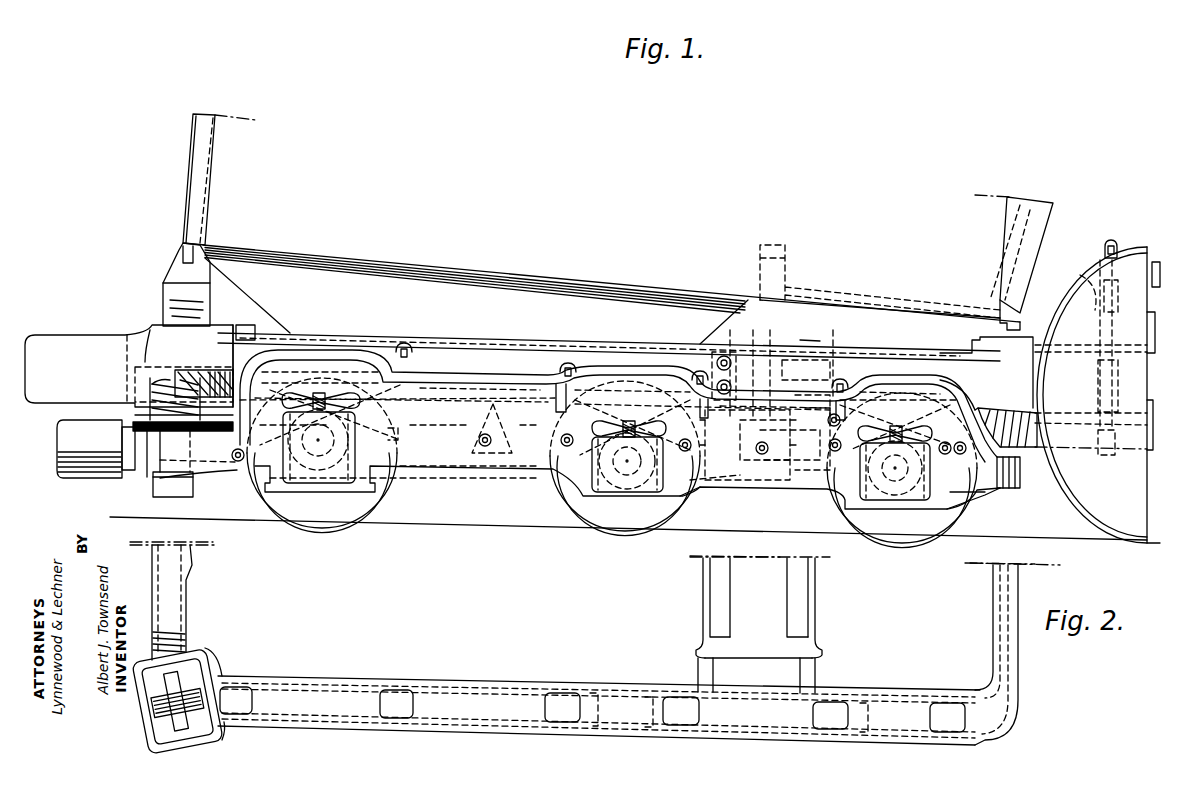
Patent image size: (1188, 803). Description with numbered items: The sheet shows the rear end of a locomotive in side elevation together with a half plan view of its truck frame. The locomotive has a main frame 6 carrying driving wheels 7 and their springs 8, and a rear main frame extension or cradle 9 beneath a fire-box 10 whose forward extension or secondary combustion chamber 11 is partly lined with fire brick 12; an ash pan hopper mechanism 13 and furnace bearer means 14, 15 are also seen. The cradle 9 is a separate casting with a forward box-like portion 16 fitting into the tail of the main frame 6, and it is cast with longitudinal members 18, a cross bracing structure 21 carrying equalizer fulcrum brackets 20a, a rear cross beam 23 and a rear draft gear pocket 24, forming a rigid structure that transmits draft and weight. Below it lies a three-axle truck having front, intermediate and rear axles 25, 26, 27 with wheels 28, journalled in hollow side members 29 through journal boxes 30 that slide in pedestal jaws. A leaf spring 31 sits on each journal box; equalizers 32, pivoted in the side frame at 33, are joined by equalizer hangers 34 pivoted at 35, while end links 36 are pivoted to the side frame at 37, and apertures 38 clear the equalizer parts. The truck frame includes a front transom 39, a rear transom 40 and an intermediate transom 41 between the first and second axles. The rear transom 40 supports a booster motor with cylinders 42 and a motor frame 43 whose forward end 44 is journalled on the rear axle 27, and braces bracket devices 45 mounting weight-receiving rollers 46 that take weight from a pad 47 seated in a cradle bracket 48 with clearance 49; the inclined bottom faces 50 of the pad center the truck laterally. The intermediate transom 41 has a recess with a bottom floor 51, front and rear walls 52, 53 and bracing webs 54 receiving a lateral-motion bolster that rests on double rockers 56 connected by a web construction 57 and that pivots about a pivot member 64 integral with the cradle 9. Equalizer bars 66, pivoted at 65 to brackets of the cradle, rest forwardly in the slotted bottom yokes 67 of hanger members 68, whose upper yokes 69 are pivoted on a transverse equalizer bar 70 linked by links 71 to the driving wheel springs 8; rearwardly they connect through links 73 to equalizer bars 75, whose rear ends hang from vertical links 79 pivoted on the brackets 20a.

In FIG. 1, the main frame 6 is at (1062, 340).
In FIG. 1, the driving wheels 7 is at (1096, 508).
In FIG. 1, the springs 8 is at (1157, 262).
In FIG. 1, the main frame extension or cradle 9 is at (804, 346).
In FIG. 1, the fire-box 10 is at (611, 282).
In FIG. 1, the forward extension or secondary combustion chamber 11 is at (880, 284).
In FIG. 1, the fire brick 12 is at (786, 262).
In FIG. 1, the ash pan hopper mechanism 13 is at (510, 471).
In FIG. 1, the furnace bearer means 14 is at (1000, 327).
In FIG. 1, the furnace bearer means 15 is at (180, 272).
In FIG. 1, the forward box-like portion 16 is at (1007, 415).
In FIG. 1, the longitudinal members 18 is at (609, 350).
In FIG. 1, the equalizer fulcrum brackets 20a is at (745, 364).
In FIG. 1, the cross bracing structure 21 is at (837, 358).
In FIG. 1, the rear cross beam 23 is at (203, 366).
In FIG. 1, the rear draft gear pocket 24 is at (129, 366).
In FIG. 1, the front axle 25 is at (952, 498).
In FIG. 1, the intermediate axle 26 is at (690, 498).
In FIG. 1, the rear axle 27 is at (395, 480).
In FIG. 1, the wheels 28 is at (340, 522).
In FIG. 1, the side members 29 is at (618, 406).
In FIG. 2, the side members 29 is at (494, 735).
In FIG. 1, the journal boxes 30 is at (318, 470).
In FIG. 1, the leaf spring 31 is at (340, 395).
In FIG. 1, the equalizers 32 is at (427, 430).
In FIG. 1, the equalizer pivot 33 is at (484, 432).
In FIG. 1, the equalizer hangers 34 is at (412, 352).
In FIG. 1, the hanger pivot 35 is at (390, 432).
In FIG. 1, the end links 36 is at (255, 332).
In FIG. 1, the end link pivot 37 is at (231, 457).
In FIG. 2, the apertures 38 is at (248, 690).
In FIG. 1, the front transom 39 is at (1020, 478).
In FIG. 2, the front transom 39 is at (992, 610).
In FIG. 1, the rear transom 40 is at (160, 498).
In FIG. 2, the rear transom 40 is at (187, 597).
In FIG. 2, the intermediate transom structure 41 is at (698, 665).
In FIG. 1, the cylinders 42 is at (96, 449).
In FIG. 1, the casing or motor frame 43 is at (224, 484).
In FIG. 1, the forward end of motor frame 44 is at (372, 440).
In FIG. 1, the bracket devices 45 is at (152, 440).
In FIG. 2, the bracket devices 45 is at (148, 727).
In FIG. 1, the weight-receiving rollers 46 is at (135, 420).
In FIG. 2, the weight-receiving rollers 46 is at (190, 690).
In FIG. 1, the pad member 47 is at (198, 372).
In FIG. 1, the bracket 48 is at (145, 345).
In FIG. 1, the clearance 49 is at (134, 378).
In FIG. 1, the inclined bottom faces 50 is at (190, 402).
In FIG. 1, the bottom floor 51 is at (736, 482).
In FIG. 2, the bottom floor 51 is at (769, 597).
In FIG. 1, the front wall 52 is at (827, 490).
In FIG. 2, the front wall 52 is at (816, 602).
In FIG. 1, the rear wall 53 is at (700, 452).
In FIG. 2, the rear wall 53 is at (702, 593).
In FIG. 2, the bracing webs 54 is at (768, 656).
In FIG. 1, the double rockers 56 is at (718, 476).
In FIG. 1, the integral web construction 57 is at (790, 482).
In FIG. 1, the pivot member 64 is at (780, 374).
In FIG. 1, the equalizer bar pivots 65 is at (980, 410).
In FIG. 1, the equalizer bars 66 is at (1028, 447).
In FIG. 1, the slotted bottom yokes 67 is at (1104, 458).
In FIG. 1, the hanger members 68 is at (1118, 378).
In FIG. 1, the upper yokes 69 is at (1119, 302).
In FIG. 1, the transverse equalizer bar 70 is at (1098, 304).
In FIG. 1, the links 71 is at (1114, 244).
In FIG. 1, the links 73 is at (844, 436).
In FIG. 1, the equalizer bars 75 is at (770, 342).
In FIG. 1, the vertical links 79 is at (748, 356).